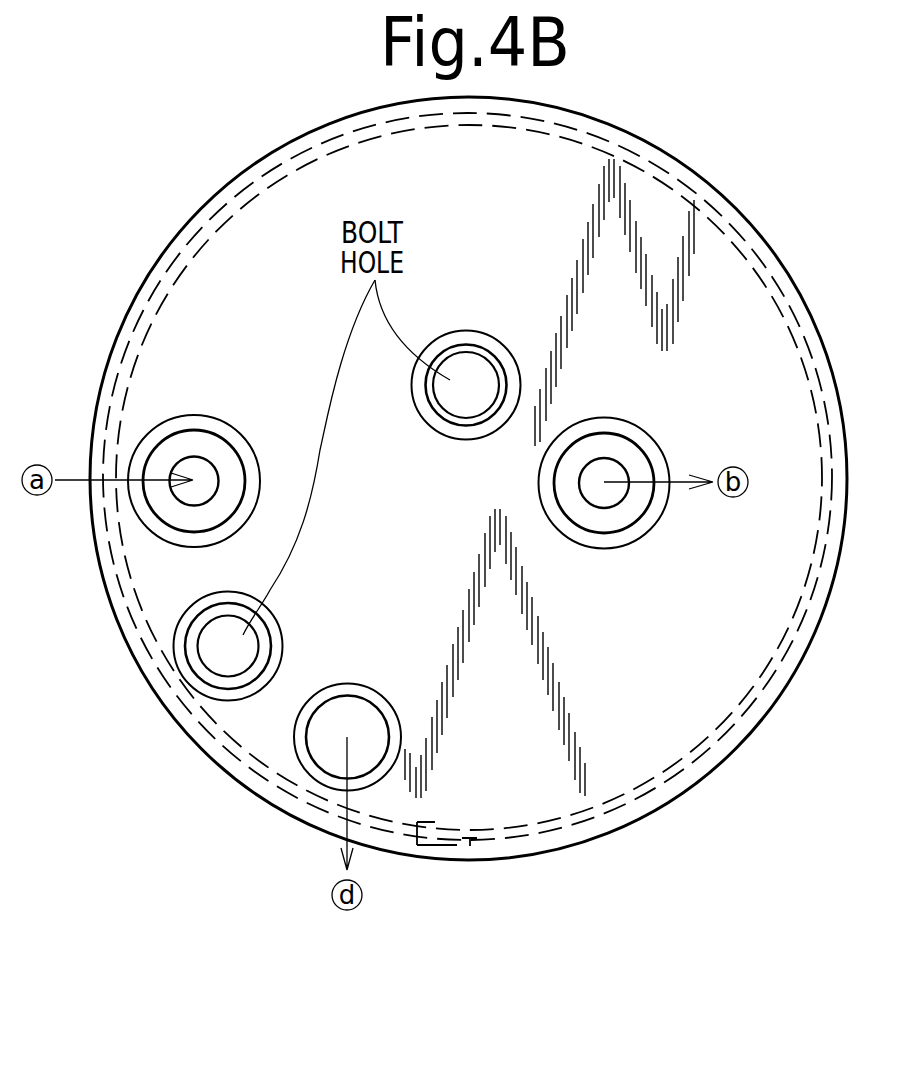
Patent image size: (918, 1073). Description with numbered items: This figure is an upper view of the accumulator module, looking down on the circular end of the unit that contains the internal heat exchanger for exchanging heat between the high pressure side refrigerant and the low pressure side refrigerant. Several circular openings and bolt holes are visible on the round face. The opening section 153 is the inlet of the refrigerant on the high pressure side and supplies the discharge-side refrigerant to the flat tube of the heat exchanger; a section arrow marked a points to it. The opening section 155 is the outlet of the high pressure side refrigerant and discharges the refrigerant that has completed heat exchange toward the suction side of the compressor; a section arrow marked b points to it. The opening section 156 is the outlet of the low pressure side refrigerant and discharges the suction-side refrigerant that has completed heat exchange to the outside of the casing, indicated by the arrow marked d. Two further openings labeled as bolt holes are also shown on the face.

The opening section 153 is at (195, 463).
The opening section 155 is at (604, 467).
The opening section 156 is at (322, 753).